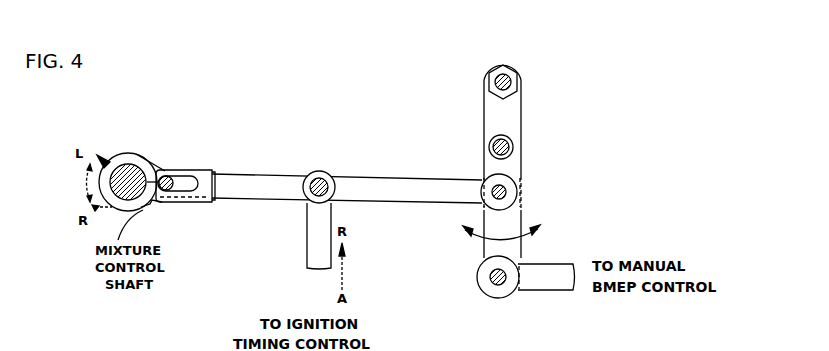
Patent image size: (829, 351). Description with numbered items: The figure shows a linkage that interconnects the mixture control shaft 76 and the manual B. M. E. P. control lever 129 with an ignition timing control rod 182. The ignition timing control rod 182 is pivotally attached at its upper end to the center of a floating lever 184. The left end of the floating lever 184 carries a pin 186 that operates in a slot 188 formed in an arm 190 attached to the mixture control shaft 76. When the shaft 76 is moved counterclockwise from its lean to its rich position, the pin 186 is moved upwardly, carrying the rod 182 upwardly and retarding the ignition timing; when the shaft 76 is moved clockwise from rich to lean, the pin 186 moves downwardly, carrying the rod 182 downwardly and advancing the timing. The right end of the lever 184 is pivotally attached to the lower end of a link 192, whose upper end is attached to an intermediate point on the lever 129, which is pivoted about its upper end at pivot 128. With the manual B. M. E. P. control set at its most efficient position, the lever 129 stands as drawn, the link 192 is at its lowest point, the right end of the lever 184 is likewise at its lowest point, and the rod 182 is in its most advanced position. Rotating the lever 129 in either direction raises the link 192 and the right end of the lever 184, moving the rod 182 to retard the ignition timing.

The mixture control shaft 76 is at (123, 168).
The arm 190 is at (163, 203).
The slot 188 is at (196, 200).
The pin 186 is at (170, 177).
The floating lever 184 is at (283, 178).
The ignition timing control rod 182 is at (317, 244).
The manual B. M. E. P. control lever 129 is at (512, 117).
The pivot 128 is at (507, 72).
The link 192 is at (522, 157).